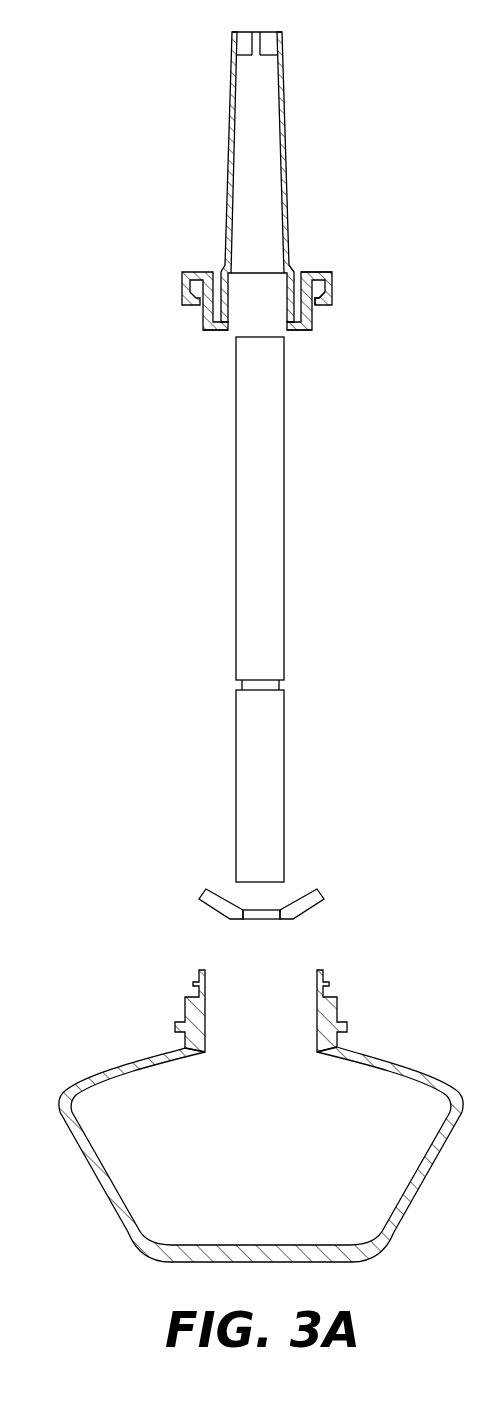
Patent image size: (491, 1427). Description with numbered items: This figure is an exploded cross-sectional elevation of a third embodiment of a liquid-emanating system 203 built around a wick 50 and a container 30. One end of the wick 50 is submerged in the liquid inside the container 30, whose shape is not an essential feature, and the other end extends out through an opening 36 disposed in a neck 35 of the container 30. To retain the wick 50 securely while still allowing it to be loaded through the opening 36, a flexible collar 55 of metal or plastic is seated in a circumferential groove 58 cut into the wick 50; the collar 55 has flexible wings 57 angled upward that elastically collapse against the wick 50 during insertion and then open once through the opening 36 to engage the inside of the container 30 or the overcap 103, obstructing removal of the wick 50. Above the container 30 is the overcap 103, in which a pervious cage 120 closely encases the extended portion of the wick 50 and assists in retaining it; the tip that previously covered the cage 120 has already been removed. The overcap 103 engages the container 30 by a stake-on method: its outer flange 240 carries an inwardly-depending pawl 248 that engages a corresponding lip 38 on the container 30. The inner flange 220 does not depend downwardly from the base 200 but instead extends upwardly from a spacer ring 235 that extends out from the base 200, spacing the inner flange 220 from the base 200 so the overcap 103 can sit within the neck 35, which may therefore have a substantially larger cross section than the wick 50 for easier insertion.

The container 30 is at (261, 1095).
The neck 35 is at (200, 1030).
The opening 36 is at (255, 1022).
The lip 38 is at (328, 983).
The wick 50 is at (236, 477).
The flexible collar 55 is at (247, 891).
The flexible wings 57 is at (205, 903).
The circumferential groove 58 is at (240, 686).
The overcap 103 is at (218, 134).
The pervious cage 120 is at (229, 32).
The base 200 is at (207, 305).
The assembly 203 is at (360, 482).
The inner flange 220 is at (316, 331).
The spacer ring 235 is at (212, 331).
The outer flange 240 is at (334, 273).
The pawl 248 is at (333, 299).